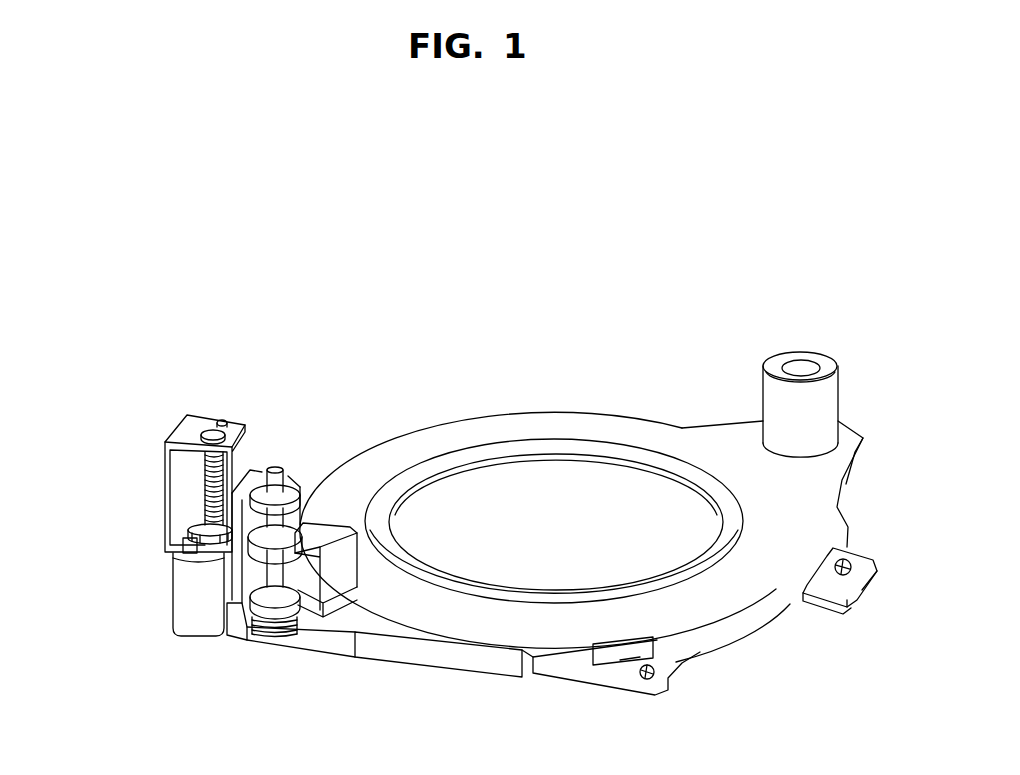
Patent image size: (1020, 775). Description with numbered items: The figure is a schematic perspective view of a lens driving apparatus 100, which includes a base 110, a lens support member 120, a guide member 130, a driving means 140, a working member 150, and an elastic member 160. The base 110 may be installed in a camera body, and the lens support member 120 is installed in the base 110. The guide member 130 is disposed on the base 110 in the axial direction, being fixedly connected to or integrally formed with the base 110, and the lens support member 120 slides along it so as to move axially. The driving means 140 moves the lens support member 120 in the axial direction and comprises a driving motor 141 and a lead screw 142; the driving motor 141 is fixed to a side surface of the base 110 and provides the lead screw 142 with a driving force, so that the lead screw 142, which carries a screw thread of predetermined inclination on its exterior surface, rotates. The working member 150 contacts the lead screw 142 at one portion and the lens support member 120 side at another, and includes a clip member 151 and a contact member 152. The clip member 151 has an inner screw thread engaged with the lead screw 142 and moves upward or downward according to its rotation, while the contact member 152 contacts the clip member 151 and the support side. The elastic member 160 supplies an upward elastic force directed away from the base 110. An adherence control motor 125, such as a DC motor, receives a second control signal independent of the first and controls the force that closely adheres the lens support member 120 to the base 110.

The lens driving apparatus 100 is at (208, 348).
The base 110 is at (432, 660).
The lens support member 120 is at (478, 637).
The adherence control motor 125 is at (800, 360).
The guide member 130 is at (227, 555).
The driving means 140 is at (102, 463).
The driving motor 141 is at (182, 577).
The lead screw 142 is at (206, 470).
The working member 150 is at (102, 612).
The clip member 151 is at (203, 558).
The contact member 152 is at (200, 540).
The elastic member 160 is at (273, 632).